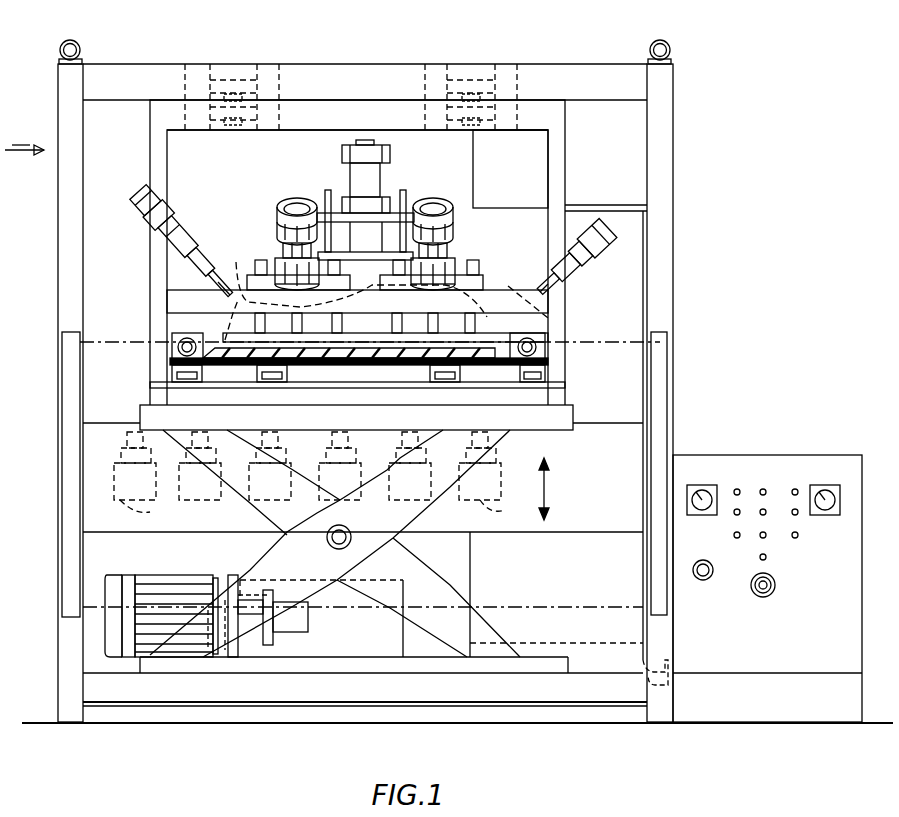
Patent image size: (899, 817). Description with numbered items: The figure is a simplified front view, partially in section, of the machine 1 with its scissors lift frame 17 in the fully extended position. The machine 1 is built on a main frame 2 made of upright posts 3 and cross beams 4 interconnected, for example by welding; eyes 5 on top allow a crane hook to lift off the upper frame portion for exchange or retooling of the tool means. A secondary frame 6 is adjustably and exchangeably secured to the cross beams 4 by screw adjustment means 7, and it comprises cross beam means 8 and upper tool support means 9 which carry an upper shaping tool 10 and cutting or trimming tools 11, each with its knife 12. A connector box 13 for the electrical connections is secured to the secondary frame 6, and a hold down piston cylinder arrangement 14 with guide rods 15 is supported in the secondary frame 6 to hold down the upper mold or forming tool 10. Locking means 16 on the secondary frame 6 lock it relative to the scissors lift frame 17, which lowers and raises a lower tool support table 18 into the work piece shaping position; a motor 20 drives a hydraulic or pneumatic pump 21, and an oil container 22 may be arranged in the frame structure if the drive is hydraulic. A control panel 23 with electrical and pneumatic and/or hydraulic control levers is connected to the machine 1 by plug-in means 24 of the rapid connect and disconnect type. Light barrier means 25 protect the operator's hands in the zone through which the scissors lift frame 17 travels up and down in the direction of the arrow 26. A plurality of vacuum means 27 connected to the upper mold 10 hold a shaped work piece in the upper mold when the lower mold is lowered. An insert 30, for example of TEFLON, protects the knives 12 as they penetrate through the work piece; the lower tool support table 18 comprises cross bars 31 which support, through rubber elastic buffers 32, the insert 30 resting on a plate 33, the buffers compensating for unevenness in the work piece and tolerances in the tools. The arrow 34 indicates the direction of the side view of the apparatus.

The machine 1 is at (684, 318).
The main frame 2 is at (95, 114).
The upright posts 3 is at (58, 263).
The cross beams 4 is at (572, 64).
The eyes 5 is at (79, 44).
The secondary frame 6 is at (566, 172).
The screw adjustment means 7 is at (236, 93).
The cross beam means 8 is at (417, 131).
The upper tool support means 9 is at (494, 289).
The upper shaping tool 10 is at (384, 291).
The cutting or trimming tools 11 is at (182, 218).
The knife 12 is at (226, 292).
The connector box 13 is at (500, 176).
The hold down piston cylinder arrangement 14 is at (356, 190).
The guide rods 15 is at (328, 190).
The locking means 16 is at (178, 348).
The scissors lift frame 17 is at (420, 512).
The lower tool support table 18 is at (563, 410).
The motor 20 is at (128, 575).
The hydraulic or pneumatic pump 21 is at (290, 632).
The oil container 22 is at (357, 640).
The control panel 23 is at (793, 455).
The plug-in means 24 is at (674, 660).
The light barrier means 25 is at (62, 372).
The arrow 26 is at (548, 485).
The vacuum means 27 is at (322, 480).
The insert 30 is at (470, 358).
The cross bars 31 is at (384, 366).
The rubber elastic buffers 32 is at (300, 366).
The plate 33 is at (250, 366).
The arrow 34 is at (22, 158).